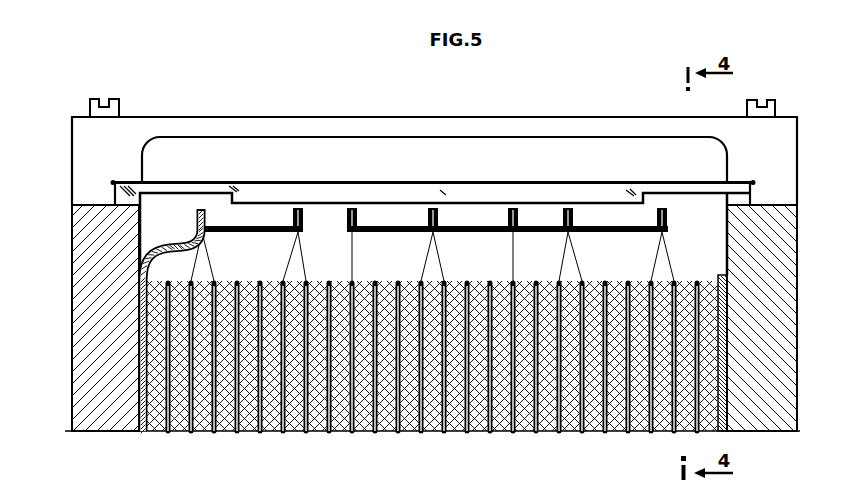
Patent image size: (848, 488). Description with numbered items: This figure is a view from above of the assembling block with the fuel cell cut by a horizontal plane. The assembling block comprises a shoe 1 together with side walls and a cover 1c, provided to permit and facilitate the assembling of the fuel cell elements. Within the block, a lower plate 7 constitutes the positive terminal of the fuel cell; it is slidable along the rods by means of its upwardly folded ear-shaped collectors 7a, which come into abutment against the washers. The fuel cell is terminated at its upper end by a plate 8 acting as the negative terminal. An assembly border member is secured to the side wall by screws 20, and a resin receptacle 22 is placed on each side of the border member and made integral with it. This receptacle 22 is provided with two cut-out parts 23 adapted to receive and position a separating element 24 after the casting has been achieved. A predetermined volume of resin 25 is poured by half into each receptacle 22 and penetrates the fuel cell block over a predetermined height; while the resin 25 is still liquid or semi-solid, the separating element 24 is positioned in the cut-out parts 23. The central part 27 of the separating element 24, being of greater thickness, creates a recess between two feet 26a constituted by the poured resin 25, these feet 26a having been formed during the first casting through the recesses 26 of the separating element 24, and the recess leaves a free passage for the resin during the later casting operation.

The shoe 1 is at (773, 401).
The cover 1c is at (107, 410).
The lower plate 7 is at (142, 434).
The ear-shaped collectors 7a is at (198, 220).
The plate 8 is at (735, 396).
The screws 20 is at (767, 99).
The resin receptacle 22 is at (267, 124).
The cut-out parts 23 is at (755, 182).
The separating element 24 is at (406, 172).
The resin 25 is at (524, 150).
The recesses 26 is at (672, 192).
The feet 26a is at (693, 202).
The central part 27 is at (301, 192).